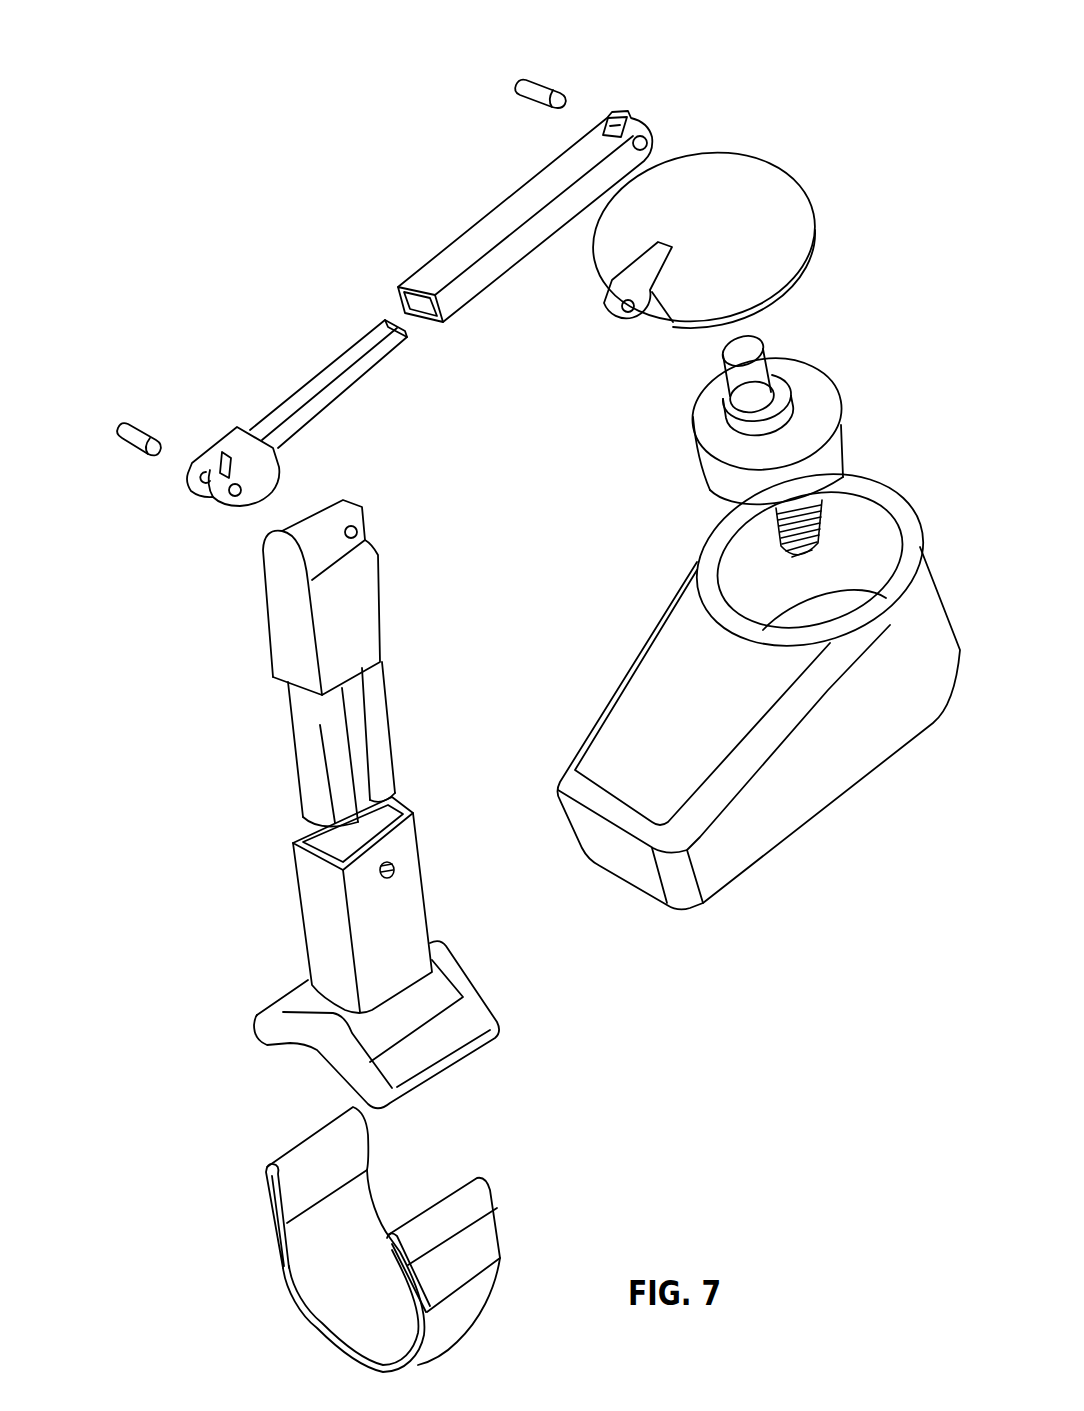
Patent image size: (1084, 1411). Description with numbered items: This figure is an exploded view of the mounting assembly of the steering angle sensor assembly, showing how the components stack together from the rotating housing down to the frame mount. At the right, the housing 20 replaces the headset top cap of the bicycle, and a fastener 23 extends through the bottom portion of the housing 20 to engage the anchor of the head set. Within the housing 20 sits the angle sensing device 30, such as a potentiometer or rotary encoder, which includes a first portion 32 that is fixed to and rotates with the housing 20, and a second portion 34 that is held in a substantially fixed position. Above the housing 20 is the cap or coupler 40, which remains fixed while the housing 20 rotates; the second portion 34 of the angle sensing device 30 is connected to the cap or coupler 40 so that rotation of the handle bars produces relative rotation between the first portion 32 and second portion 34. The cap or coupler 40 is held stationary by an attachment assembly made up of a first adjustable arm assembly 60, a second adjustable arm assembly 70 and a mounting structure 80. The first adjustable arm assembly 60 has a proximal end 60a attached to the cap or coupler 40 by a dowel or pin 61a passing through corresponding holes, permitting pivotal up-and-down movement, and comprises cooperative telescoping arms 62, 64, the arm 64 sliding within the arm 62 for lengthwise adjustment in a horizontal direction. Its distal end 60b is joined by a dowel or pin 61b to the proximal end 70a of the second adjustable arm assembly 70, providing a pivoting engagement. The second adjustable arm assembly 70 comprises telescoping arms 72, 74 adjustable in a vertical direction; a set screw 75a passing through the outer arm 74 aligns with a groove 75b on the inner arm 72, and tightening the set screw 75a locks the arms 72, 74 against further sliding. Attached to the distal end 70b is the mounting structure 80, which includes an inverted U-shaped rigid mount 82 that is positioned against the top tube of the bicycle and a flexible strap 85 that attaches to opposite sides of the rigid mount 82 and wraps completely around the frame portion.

The housing 20 is at (775, 822).
The fastener 23 is at (812, 530).
The angle sensing device 30 is at (805, 400).
The first portion 32 is at (830, 445).
The second portion 34 is at (752, 383).
The cap or coupler 40 is at (760, 222).
The first adjustable arm assembly 60 is at (297, 218).
The proximal end 60a is at (614, 122).
The distal end 60b is at (198, 460).
The dowel or pin 61a is at (520, 88).
The dowel or pin 61b is at (122, 432).
The arm 62 is at (480, 222).
The arm 64 is at (307, 382).
The second adjustable arm assembly 70 is at (188, 797).
The proximal end 70a is at (236, 560).
The distal end 70b is at (258, 987).
The inner arm 72 is at (300, 714).
The outer arm 74 is at (312, 927).
The set screw 75a is at (397, 872).
The groove 75b is at (357, 717).
The mounting structure 80 is at (174, 1182).
The rigid mount 82 is at (302, 1045).
The strap 85 is at (330, 1317).